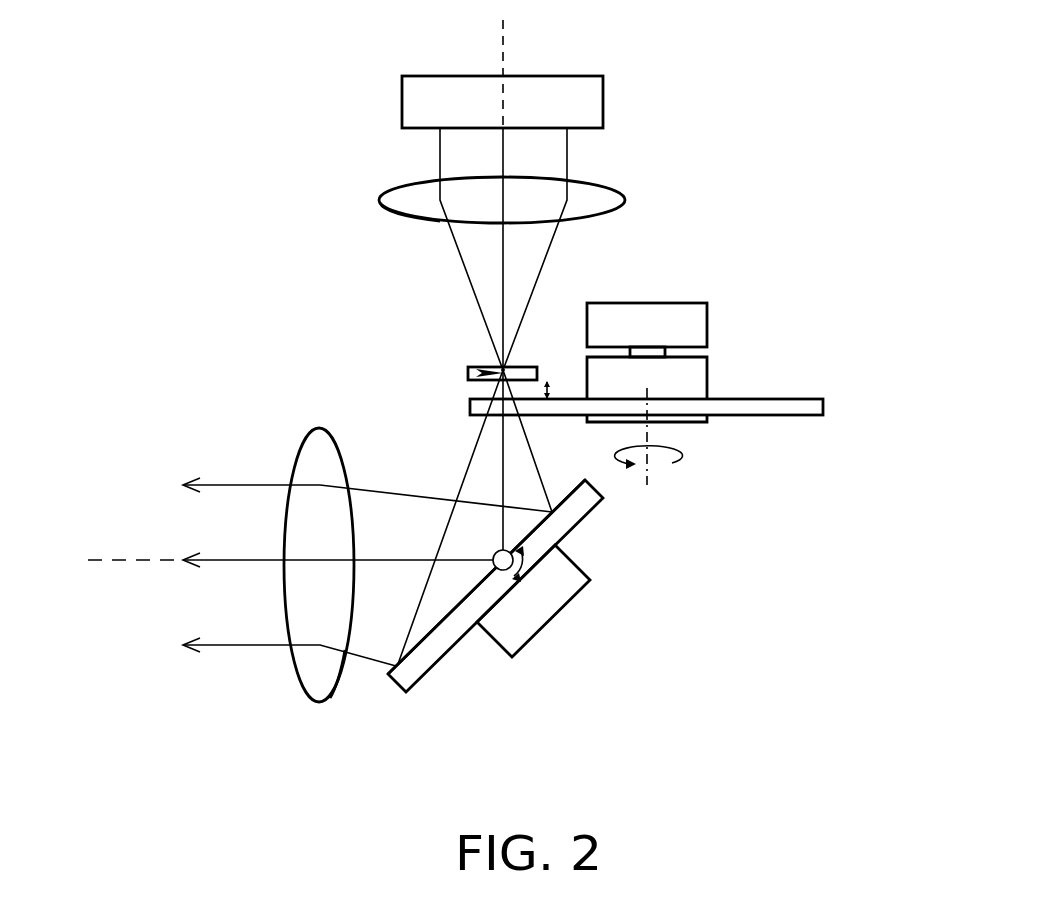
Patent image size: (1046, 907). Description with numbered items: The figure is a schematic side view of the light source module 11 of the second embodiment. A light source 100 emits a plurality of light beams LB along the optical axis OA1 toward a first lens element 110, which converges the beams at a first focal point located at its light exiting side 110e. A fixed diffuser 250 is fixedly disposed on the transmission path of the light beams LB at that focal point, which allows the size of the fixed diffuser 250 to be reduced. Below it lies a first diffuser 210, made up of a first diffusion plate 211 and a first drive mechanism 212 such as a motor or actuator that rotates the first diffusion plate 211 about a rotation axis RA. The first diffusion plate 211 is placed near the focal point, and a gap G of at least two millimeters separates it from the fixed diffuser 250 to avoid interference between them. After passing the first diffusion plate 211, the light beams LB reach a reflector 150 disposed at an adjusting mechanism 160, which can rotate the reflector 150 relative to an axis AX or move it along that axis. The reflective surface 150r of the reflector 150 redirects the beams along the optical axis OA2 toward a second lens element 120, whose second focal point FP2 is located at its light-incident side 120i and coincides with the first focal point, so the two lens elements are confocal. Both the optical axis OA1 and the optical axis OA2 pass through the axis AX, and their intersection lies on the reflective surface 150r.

The light source 100 is at (593, 106).
The first lens element 110 is at (603, 198).
The light exiting side 110e is at (398, 214).
The light beams LB is at (503, 148).
The optical axis of the first lens element OA1 is at (505, 23).
The optical axis of the second lens element OA2 is at (119, 558).
The fixed diffuser 250 is at (472, 366).
The second focal point FP2 is at (470, 373).
The gap G is at (557, 388).
The first diffuser 210 is at (744, 318).
The first diffusion plate 211 is at (815, 406).
The first drive mechanism 212 is at (677, 311).
The rotation axis RA is at (648, 480).
The second lens element 120 is at (315, 445).
The light-incident side 120i is at (339, 678).
The reflector 150 is at (427, 657).
The reflective surface 150r is at (452, 614).
The axis AX is at (503, 570).
The adjusting mechanism 160 is at (589, 582).
The light source module 11 is at (883, 753).